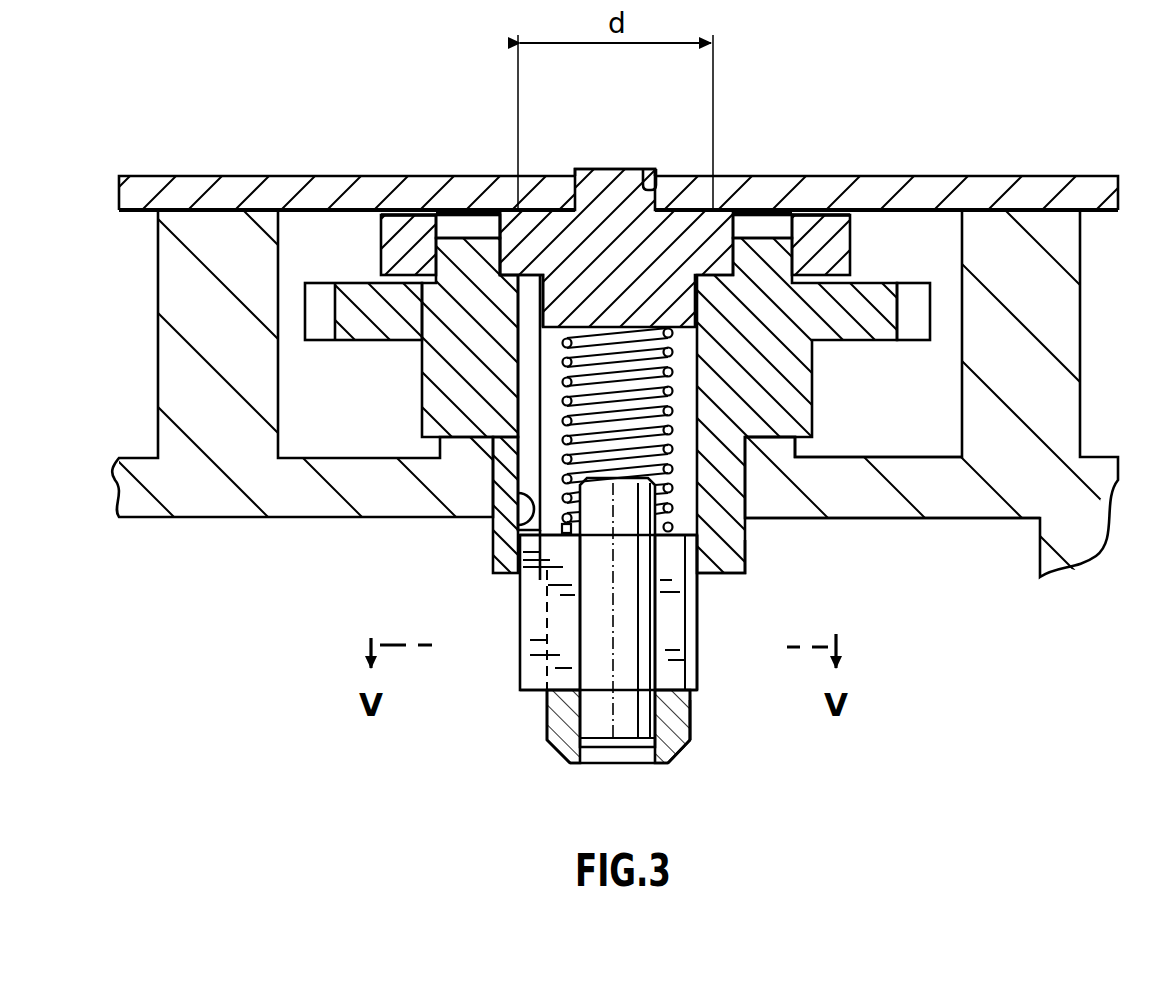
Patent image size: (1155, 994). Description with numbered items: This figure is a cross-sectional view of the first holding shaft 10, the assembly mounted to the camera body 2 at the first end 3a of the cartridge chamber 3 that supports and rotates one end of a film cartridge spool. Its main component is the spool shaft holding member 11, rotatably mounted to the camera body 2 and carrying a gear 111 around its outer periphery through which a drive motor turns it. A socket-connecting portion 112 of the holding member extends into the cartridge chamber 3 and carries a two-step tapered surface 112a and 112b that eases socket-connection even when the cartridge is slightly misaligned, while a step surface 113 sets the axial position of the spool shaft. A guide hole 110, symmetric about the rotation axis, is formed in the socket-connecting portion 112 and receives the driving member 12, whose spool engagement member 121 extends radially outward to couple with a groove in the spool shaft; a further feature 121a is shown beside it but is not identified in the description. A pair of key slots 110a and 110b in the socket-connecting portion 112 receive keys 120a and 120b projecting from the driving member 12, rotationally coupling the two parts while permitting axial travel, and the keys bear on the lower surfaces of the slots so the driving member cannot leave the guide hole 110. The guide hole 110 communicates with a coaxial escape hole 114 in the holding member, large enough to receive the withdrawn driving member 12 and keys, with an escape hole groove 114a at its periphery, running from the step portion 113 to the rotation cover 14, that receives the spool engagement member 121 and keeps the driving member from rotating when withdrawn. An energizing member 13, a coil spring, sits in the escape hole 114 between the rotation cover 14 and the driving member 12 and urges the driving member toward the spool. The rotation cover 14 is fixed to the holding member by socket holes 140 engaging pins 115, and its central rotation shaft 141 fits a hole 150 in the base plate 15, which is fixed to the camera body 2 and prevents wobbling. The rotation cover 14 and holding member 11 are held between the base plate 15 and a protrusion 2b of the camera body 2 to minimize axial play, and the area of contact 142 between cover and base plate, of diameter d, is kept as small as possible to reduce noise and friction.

The camera body 2 is at (1062, 318).
The protrusion 2b is at (784, 450).
The cartridge chamber 3 is at (912, 609).
The first end of the cartridge chamber 3a is at (980, 522).
The first holding shaft 10 is at (530, 737).
The spool shaft holding member 11 is at (432, 397).
The driving member 12 is at (625, 740).
The energizing member 13 is at (599, 362).
The rotation cover 14 is at (694, 208).
The base plate 15 is at (972, 188).
The guide hole 110 is at (596, 745).
The key slot 110a is at (562, 683).
The key slot 110b is at (688, 674).
The gear 111 is at (915, 322).
The socket-connecting portion 112 is at (699, 645).
The tapered surface 112a is at (684, 754).
The tapered surface 112b is at (704, 734).
The step surface 113 is at (738, 576).
The escape hole 114 is at (701, 412).
The escape hole groove 114a is at (530, 522).
The pin 115 is at (482, 234).
The key 120a is at (560, 606).
The key 120b is at (693, 703).
The spool engagement member 121 is at (525, 603).
The nut thread line 121a is at (548, 690).
The socket hole 140 is at (446, 214).
The rotation shaft 141 is at (607, 182).
The area of contact 142 is at (531, 215).
The hole 150 is at (652, 178).